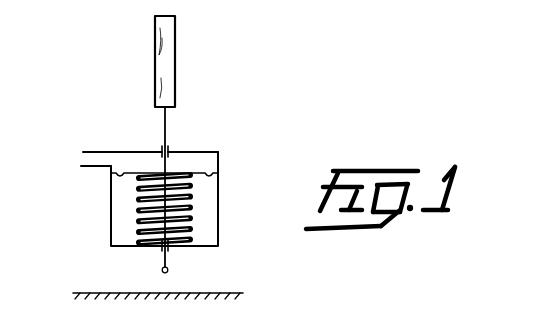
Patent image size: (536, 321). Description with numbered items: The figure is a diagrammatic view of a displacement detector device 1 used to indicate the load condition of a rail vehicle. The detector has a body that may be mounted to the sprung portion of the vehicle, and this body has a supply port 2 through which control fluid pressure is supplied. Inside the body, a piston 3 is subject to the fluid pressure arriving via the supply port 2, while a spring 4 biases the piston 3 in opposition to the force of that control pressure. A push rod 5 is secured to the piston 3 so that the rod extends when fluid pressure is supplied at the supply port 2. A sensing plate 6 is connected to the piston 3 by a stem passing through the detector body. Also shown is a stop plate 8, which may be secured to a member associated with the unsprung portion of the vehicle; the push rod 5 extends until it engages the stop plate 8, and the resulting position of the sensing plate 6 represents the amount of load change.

The displacement detector device 1 is at (218, 157).
The supply port 2 is at (83, 155).
The piston 3 is at (207, 176).
The spring 4 is at (192, 200).
The push rod 5 is at (168, 258).
The sensing plate 6 is at (168, 62).
The stop plate 8 is at (195, 293).